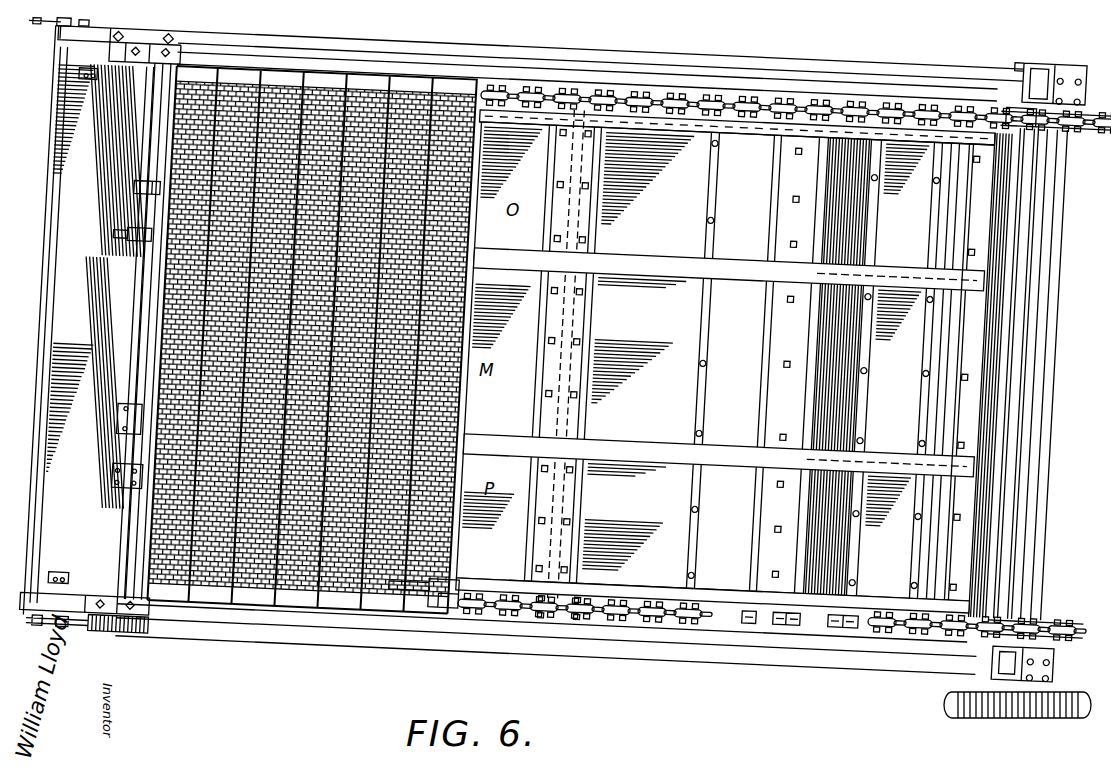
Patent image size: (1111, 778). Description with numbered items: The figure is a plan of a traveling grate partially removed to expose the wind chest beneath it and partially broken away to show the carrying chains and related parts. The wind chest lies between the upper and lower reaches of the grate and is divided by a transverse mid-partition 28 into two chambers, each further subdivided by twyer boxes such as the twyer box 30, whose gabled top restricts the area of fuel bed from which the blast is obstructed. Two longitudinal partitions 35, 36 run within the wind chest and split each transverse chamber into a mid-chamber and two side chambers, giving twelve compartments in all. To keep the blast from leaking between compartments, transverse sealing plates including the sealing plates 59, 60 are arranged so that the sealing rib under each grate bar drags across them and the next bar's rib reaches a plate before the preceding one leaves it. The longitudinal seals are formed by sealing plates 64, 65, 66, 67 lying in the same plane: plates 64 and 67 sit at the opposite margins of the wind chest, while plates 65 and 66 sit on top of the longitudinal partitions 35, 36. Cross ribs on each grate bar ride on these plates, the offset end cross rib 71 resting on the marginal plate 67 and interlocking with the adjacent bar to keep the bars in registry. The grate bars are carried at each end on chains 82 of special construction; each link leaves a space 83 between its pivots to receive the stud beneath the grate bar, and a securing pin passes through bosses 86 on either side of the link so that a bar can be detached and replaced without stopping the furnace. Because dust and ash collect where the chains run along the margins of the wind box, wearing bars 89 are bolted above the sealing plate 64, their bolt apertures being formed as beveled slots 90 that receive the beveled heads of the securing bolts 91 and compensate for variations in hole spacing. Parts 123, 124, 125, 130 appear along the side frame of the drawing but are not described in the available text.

The transverse mid-partition 28 is at (566, 334).
The twyer box 30 is at (712, 360).
The longitudinal partition 35 is at (656, 452).
The longitudinal partition 36 is at (690, 262).
The sealing plate 59 is at (548, 401).
The sealing plate 60 is at (775, 363).
The sealing plate 64 is at (633, 588).
The sealing plate 65 is at (604, 442).
The sealing plate 66 is at (690, 268).
The sealing plate 67 is at (742, 170).
The sealing cross rib 71 is at (737, 133).
The chain 82 is at (686, 88).
The space 83 is at (606, 620).
The boss 86 is at (513, 590).
The wearing bar 89 is at (772, 628).
The slot 90 is at (745, 624).
The securing bolt 91 is at (798, 628).
The rod clamp 123 is at (137, 348).
The bracket 124 is at (140, 231).
The rod 125 is at (133, 322).
The rod fitting 130 is at (165, 180).